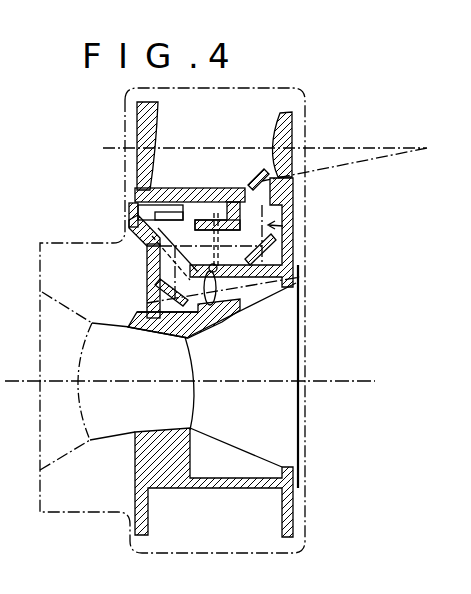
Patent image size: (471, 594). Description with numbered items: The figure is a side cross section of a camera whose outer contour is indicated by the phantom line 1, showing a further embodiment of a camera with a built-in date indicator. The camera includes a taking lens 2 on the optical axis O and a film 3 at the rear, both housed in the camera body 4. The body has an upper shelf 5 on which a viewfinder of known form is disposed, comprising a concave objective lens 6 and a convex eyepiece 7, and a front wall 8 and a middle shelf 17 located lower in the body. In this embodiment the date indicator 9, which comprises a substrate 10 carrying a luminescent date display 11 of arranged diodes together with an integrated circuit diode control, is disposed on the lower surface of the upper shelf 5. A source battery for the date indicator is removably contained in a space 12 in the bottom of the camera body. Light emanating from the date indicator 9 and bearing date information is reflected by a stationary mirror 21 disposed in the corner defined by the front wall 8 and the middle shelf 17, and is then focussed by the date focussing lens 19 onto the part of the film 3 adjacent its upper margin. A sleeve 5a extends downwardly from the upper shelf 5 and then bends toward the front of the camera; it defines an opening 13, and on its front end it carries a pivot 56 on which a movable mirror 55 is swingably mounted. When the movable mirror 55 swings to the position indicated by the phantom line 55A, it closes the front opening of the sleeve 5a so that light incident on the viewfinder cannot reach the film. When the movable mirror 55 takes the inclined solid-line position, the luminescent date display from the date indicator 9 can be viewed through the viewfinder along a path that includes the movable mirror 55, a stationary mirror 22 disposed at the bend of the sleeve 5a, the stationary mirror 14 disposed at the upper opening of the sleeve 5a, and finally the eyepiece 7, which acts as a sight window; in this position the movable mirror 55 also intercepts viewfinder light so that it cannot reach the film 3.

The phantom line 1 is at (309, 446).
The taking lens 2 is at (125, 435).
The film 3 is at (300, 358).
The camera body 4 is at (296, 206).
The upper shelf 5 is at (210, 189).
The sleeve 5a is at (208, 228).
The concave objective lens 6 is at (152, 126).
The convex eyepiece 7 is at (283, 130).
The front wall 8 is at (137, 302).
The date indicator 9 is at (158, 216).
The substrate 10 is at (160, 194).
The date display 11 is at (150, 278).
The space 12 is at (219, 527).
The opening 13 is at (283, 226).
The stationary mirror 14 is at (258, 181).
The middle shelf 17 is at (181, 323).
The date focussing lens 19 is at (222, 290).
The stationary mirror 21 is at (151, 326).
The stationary mirror 22 is at (268, 252).
The movable mirror 55 is at (156, 285).
The phantom line 55A is at (190, 200).
The pivot 56 is at (193, 322).
The optical axis O is at (216, 382).